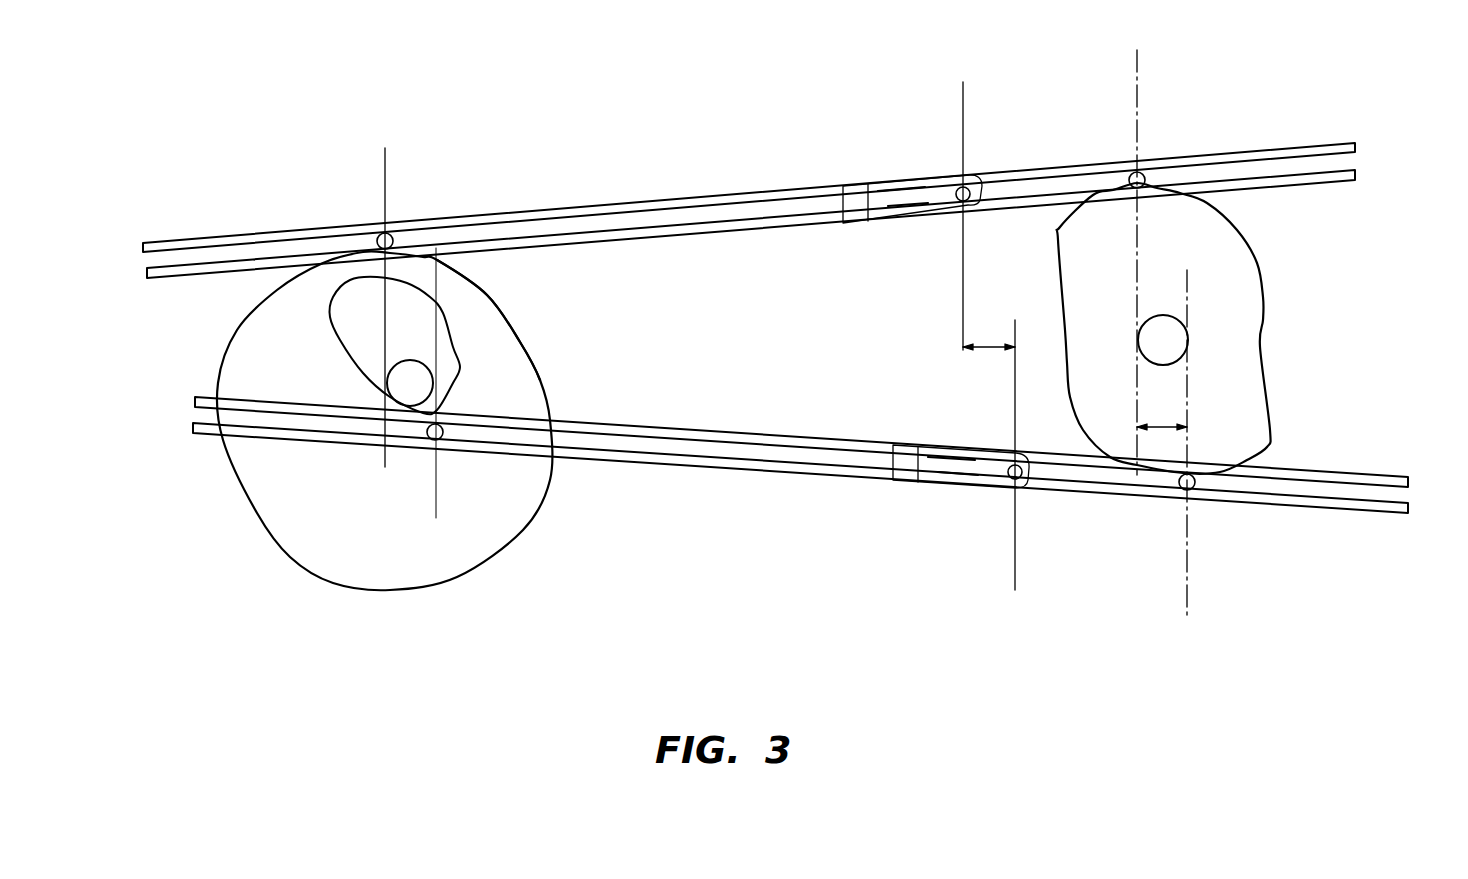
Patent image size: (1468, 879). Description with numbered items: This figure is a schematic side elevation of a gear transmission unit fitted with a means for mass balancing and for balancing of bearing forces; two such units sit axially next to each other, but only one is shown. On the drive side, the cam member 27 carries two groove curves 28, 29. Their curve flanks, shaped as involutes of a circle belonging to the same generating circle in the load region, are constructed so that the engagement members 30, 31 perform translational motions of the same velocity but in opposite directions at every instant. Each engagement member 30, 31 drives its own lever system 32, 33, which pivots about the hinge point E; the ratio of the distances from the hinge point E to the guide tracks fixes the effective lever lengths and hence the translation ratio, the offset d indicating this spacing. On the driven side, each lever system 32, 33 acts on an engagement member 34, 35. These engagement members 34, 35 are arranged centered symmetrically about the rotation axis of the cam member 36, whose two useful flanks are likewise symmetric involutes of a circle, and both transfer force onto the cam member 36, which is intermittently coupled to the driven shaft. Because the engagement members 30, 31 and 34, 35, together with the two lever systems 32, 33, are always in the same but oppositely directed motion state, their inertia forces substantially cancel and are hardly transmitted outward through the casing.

The cam member 27 is at (338, 532).
The groove curve 28 is at (487, 295).
The groove curve 29 is at (463, 365).
The engagement member 30 is at (393, 232).
The engagement member 31 is at (440, 437).
The lever system 32 is at (698, 205).
The lever system 33 is at (745, 470).
The engagement member 34 is at (1147, 173).
The engagement member 35 is at (1192, 490).
The cam member 36 is at (1240, 277).
The hinge point E is at (970, 177).
The offset distance d is at (1075, 336).